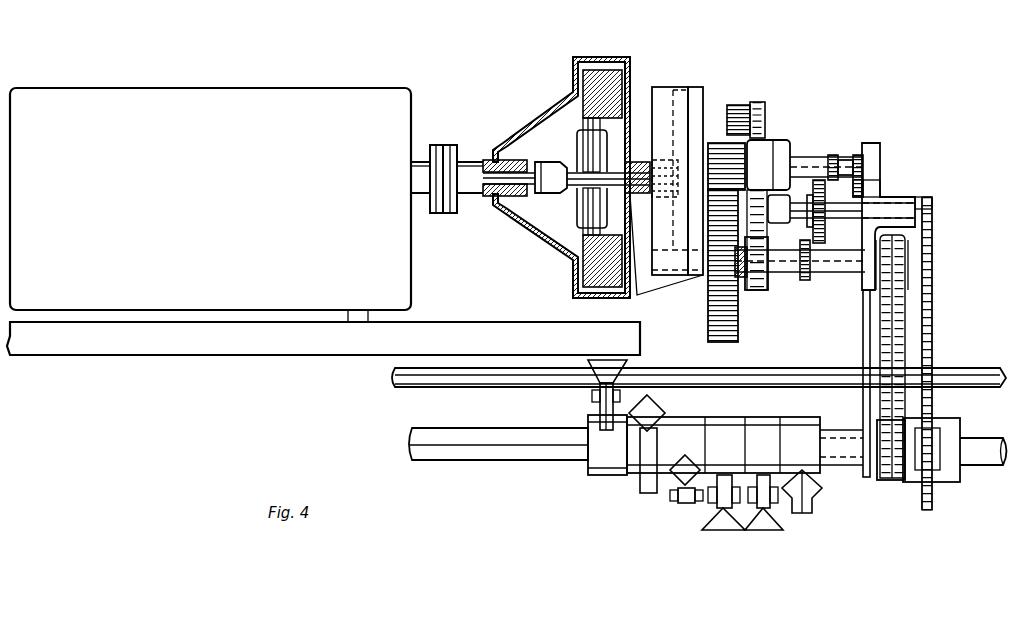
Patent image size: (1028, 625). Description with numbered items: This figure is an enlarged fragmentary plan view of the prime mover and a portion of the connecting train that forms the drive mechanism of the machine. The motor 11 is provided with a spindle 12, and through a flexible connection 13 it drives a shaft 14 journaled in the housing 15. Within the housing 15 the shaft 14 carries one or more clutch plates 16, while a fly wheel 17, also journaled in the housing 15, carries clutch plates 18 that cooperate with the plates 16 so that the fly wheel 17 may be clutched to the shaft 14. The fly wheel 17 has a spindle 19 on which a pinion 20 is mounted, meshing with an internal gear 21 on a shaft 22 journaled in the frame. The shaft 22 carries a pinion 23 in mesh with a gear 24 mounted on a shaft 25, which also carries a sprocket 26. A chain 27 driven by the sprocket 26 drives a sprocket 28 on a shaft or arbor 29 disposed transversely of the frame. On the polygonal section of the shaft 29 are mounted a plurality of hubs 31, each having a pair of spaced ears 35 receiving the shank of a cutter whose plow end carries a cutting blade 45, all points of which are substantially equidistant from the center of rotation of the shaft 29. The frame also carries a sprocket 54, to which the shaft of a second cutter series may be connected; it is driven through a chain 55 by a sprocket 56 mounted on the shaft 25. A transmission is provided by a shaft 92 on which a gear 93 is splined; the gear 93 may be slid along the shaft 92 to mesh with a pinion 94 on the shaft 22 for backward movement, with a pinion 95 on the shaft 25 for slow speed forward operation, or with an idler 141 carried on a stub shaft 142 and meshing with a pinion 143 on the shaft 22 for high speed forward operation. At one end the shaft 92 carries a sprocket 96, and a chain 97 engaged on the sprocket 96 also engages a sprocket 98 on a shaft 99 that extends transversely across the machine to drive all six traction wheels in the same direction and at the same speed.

The motor 11 is at (323, 221).
The spindle 12 is at (420, 170).
The flexible connection 13 is at (448, 160).
The shaft 14 is at (505, 170).
The housing 15 is at (573, 58).
The clutch plates 16 is at (577, 158).
The fly wheel 17 is at (605, 85).
The clutch plates 18 is at (578, 225).
The spindle 19 is at (645, 160).
The pinion 20 is at (668, 162).
The internal gear 21 is at (690, 100).
The shaft 22 is at (710, 150).
The pinion 23 is at (785, 150).
The gear 24 is at (735, 313).
The shaft 25 is at (740, 270).
The sprocket 26 is at (880, 285).
The chain 27 is at (878, 328).
The sprocket 28 is at (885, 482).
The shaft or arbor 29 is at (850, 455).
The hubs 31 is at (803, 430).
The ears 35 is at (683, 503).
The cutting blades 45 is at (805, 492).
The sprocket 54 is at (762, 108).
The chain 55 is at (765, 128).
The sprocket 56 is at (768, 285).
The shaft 92 is at (847, 212).
The gear 93 is at (862, 190).
The pinion 94 is at (833, 158).
The pinion 95 is at (812, 272).
The sprocket 96 is at (935, 200).
The chain 97 is at (933, 286).
The sprocket 98 is at (933, 396).
The shaft 99 is at (975, 385).
The idler 141 is at (860, 188).
The stub shaft 142 is at (880, 176).
The pinion 143 is at (858, 158).